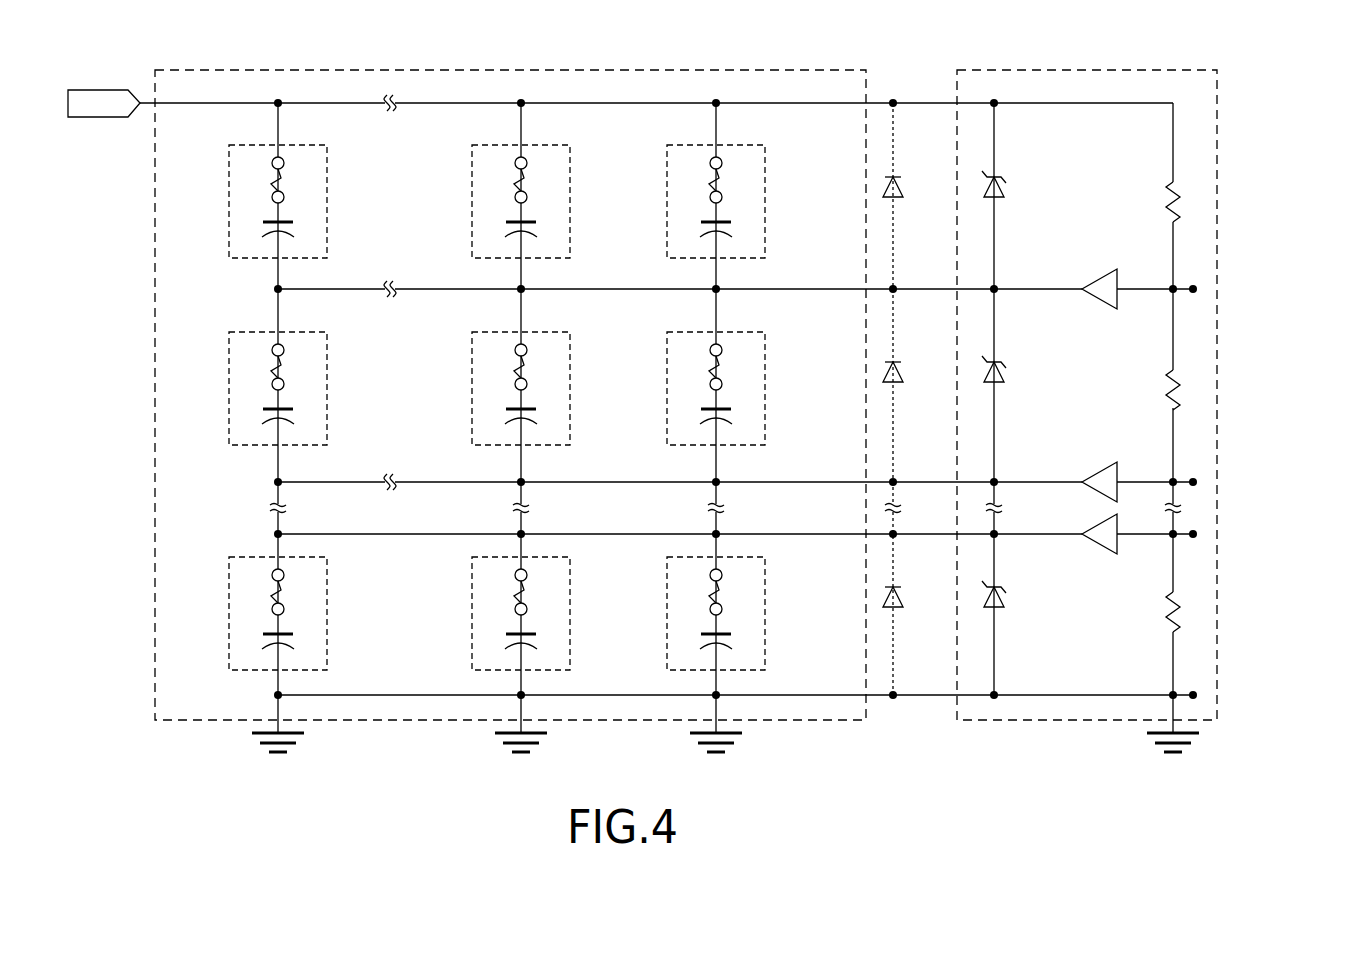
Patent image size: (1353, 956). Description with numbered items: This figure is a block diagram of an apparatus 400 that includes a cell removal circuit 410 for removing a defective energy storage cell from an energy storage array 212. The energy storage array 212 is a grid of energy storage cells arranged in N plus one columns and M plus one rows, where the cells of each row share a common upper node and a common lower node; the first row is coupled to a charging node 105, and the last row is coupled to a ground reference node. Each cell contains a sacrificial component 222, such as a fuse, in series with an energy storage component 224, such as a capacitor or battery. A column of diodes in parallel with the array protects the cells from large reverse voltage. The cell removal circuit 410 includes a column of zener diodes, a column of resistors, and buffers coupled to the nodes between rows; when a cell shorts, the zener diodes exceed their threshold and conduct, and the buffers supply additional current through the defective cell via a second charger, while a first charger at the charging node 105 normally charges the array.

The apparatus 400 is at (1340, 143).
The charging node 105 is at (118, 118).
The energy storage array 212 is at (155, 428).
The cell removal circuit 410 is at (1172, 70).
The sacrificial component 222 is at (270, 181).
The energy storage component 224 is at (268, 234).